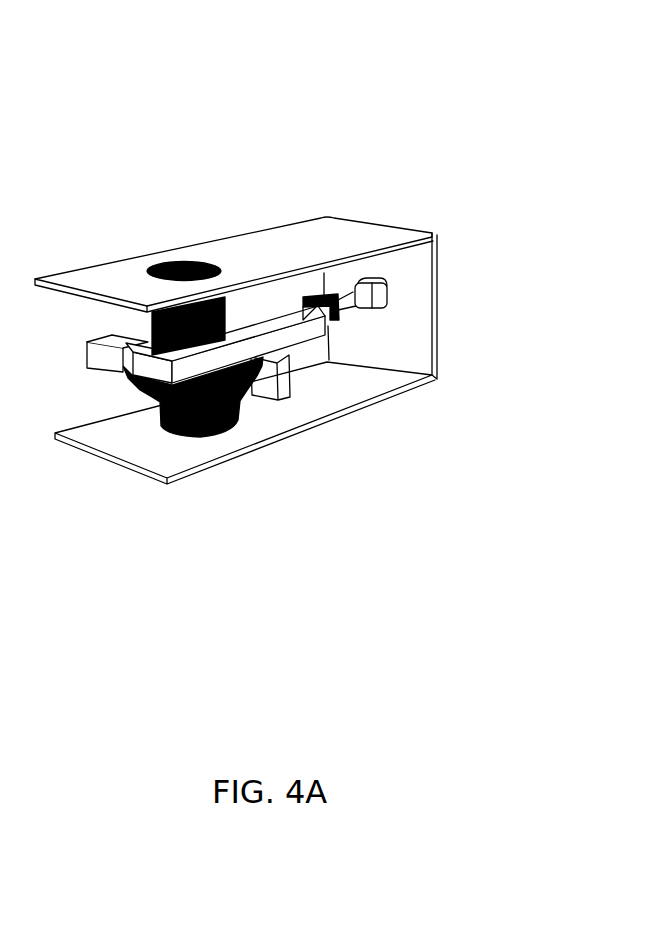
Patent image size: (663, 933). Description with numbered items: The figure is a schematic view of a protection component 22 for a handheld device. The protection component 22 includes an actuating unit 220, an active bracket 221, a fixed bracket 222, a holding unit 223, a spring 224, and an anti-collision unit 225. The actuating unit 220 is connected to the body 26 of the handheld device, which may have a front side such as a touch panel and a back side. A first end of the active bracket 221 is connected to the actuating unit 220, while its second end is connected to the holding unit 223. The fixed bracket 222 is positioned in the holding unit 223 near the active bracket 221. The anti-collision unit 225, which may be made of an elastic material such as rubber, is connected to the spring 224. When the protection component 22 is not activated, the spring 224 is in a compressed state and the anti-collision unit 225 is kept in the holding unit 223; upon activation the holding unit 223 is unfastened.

The protection component 22 is at (239, 86).
The body 26 is at (418, 313).
The actuating unit 220 is at (387, 295).
The active bracket 221 is at (346, 298).
The fixed bracket 222 is at (252, 320).
The holding unit 223 is at (288, 340).
The spring 224 is at (208, 430).
The anti-collision unit 225 is at (154, 335).